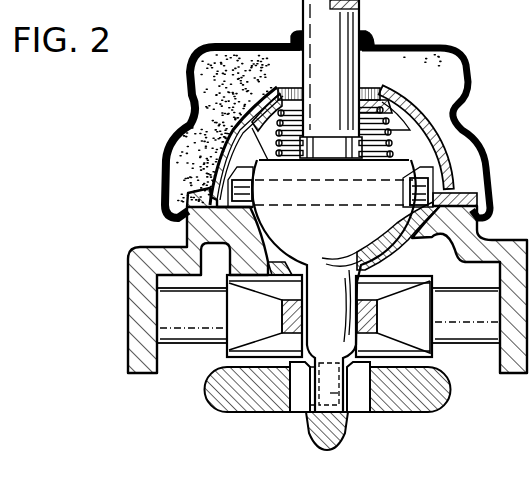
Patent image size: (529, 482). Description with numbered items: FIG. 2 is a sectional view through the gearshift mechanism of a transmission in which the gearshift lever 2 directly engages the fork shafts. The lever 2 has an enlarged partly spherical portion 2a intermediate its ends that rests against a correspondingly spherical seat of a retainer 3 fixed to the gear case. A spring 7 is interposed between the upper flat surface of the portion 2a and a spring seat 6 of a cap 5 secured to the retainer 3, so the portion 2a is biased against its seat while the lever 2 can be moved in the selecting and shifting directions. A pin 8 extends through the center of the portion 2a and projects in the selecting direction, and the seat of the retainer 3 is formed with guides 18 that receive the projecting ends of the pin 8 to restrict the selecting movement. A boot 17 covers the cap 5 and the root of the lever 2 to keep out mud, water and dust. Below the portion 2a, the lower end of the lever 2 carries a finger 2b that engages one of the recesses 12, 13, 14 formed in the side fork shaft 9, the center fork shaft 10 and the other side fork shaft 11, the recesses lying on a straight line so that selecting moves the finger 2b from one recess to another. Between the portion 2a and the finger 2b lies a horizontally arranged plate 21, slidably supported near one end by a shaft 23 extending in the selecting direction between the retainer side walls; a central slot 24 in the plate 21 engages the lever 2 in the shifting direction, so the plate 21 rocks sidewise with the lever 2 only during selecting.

The gearshift lever 2 is at (360, 19).
The partly spherical portion 2a is at (304, 240).
The finger 2b is at (338, 395).
The retainer 3 is at (128, 277).
The cap 5 is at (392, 97).
The spring seat 6 is at (297, 87).
The spring 7 is at (272, 142).
The pin 8 is at (427, 190).
The side fork shaft 9 is at (233, 411).
The center fork shaft 10 is at (327, 445).
The side fork shaft 11 is at (423, 412).
The recess 12 is at (292, 398).
The recess 13 is at (312, 405).
The recess 14 is at (365, 400).
The boot 17 is at (417, 50).
The guides 18 is at (418, 230).
The plate 21 is at (435, 347).
The shaft 23 is at (184, 336).
The slot 24 is at (375, 298).